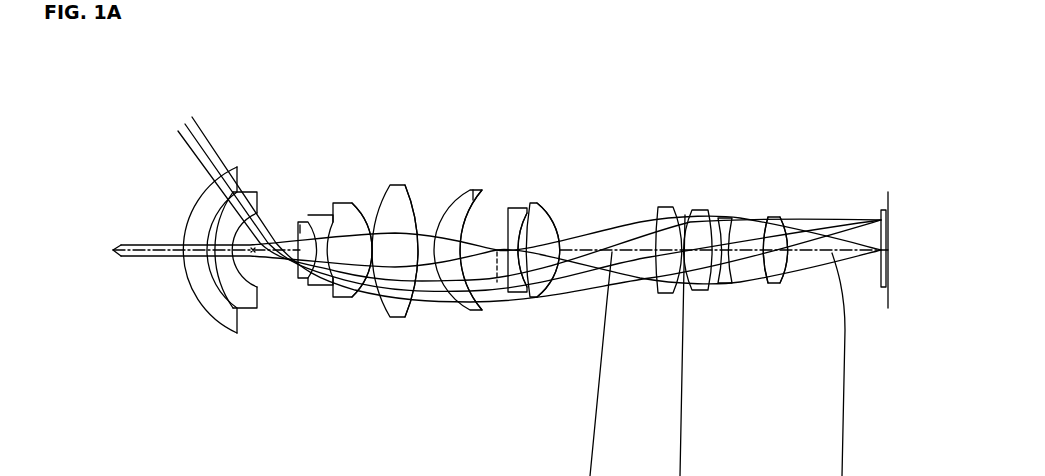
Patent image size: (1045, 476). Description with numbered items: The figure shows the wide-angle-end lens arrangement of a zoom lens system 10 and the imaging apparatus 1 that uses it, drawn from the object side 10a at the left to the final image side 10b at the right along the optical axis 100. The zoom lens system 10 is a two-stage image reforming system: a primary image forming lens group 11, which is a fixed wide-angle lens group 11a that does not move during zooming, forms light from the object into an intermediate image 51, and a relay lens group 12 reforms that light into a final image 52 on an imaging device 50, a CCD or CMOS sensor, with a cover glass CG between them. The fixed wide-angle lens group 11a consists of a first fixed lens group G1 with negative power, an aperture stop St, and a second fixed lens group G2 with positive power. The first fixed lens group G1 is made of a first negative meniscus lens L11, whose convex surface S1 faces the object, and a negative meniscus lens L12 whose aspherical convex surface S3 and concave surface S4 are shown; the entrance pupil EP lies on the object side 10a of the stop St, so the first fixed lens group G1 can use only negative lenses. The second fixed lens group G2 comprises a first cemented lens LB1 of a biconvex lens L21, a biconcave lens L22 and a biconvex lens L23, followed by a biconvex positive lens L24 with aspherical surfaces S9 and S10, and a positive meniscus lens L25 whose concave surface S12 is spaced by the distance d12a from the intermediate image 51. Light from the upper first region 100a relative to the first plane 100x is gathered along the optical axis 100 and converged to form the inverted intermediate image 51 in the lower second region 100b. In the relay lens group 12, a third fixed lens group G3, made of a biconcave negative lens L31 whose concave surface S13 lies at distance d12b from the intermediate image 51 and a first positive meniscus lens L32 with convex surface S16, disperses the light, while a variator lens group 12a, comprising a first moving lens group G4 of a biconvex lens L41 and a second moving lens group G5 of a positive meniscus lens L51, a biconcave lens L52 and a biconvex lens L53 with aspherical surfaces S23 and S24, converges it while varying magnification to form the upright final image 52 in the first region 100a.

The imaging apparatus 1 is at (512, 97).
The zoom lens system 10 is at (277, 147).
The object side 10a is at (107, 162).
The final image side 10b is at (858, 158).
The primary image forming lens group 11 is at (370, 176).
The fixed wide-angle lens group 11a is at (395, 177).
The relay lens group 12 is at (648, 184).
The variator lens group 12a is at (668, 186).
The distance dmia d12a is at (473, 190).
The distance dmib d12b is at (530, 190).
The intermediate image 51 is at (497, 248).
The imaging device 50 is at (892, 200).
The final image 52 is at (901, 271).
The cover glass CG is at (886, 290).
The optical axis 100 is at (121, 253).
The first plane 100x is at (121, 248).
The first region 100a is at (160, 198).
The second region 100b is at (136, 292).
The entrance pupil EP is at (253, 249).
The aperture stop St is at (300, 232).
The first fixed lens group G1 is at (260, 437).
The second fixed lens group G2 is at (478, 437).
The third fixed lens group G3 is at (582, 437).
The first moving lens group G4 is at (677, 437).
The second moving lens group G5 is at (815, 437).
The first cemented lens LB1 is at (397, 407).
The first negative meniscus lens L11 is at (199, 287).
The negative meniscus lens L12 is at (252, 299).
The biconvex positive lens L21 is at (305, 285).
The biconcave negative lens L22 is at (322, 286).
The biconvex positive lens L23 is at (368, 305).
The biconvex positive lens L24 is at (413, 296).
The positive meniscus lens L25 is at (470, 298).
The biconcave negative lens L31 is at (513, 307).
The first positive meniscus lens L32 is at (556, 305).
The biconvex positive lens L41 is at (665, 295).
The positive meniscus lens L51 is at (700, 292).
The biconcave negative lens L52 is at (721, 285).
The biconvex positive lens L53 is at (777, 312).
The convex surface S1 is at (205, 312).
The convex surface S3 is at (253, 312).
The concave surface S4 is at (277, 288).
The convex surface S9 is at (343, 298).
The convex surface S10 is at (421, 300).
The concave surface S12 is at (483, 300).
The concave surface S13 is at (524, 294).
The convex surface S16 is at (562, 300).
The convex surface S23 is at (765, 284).
The convex surface S24 is at (789, 276).